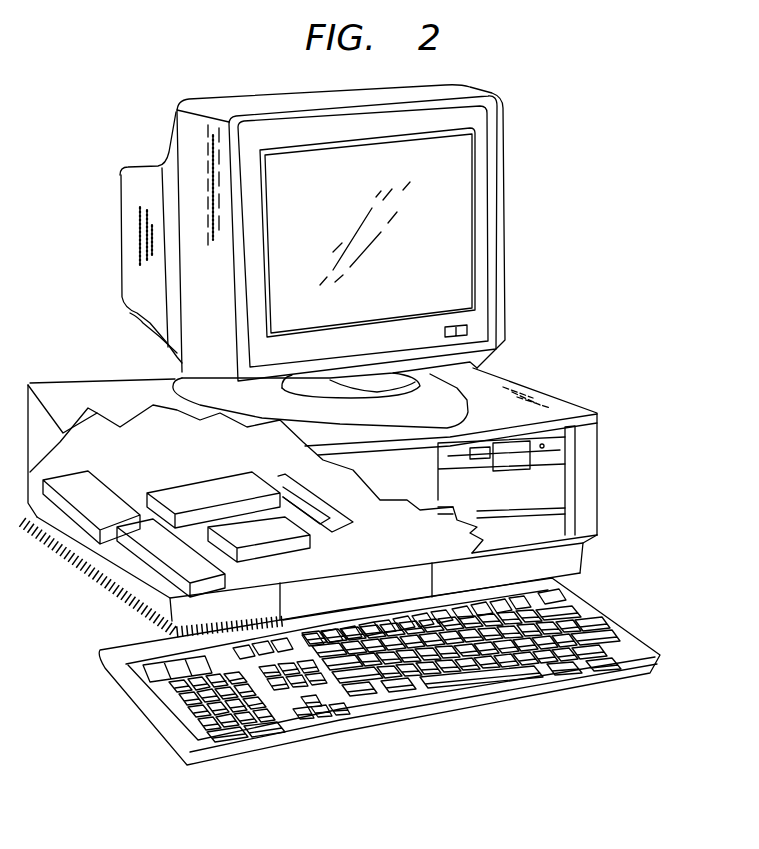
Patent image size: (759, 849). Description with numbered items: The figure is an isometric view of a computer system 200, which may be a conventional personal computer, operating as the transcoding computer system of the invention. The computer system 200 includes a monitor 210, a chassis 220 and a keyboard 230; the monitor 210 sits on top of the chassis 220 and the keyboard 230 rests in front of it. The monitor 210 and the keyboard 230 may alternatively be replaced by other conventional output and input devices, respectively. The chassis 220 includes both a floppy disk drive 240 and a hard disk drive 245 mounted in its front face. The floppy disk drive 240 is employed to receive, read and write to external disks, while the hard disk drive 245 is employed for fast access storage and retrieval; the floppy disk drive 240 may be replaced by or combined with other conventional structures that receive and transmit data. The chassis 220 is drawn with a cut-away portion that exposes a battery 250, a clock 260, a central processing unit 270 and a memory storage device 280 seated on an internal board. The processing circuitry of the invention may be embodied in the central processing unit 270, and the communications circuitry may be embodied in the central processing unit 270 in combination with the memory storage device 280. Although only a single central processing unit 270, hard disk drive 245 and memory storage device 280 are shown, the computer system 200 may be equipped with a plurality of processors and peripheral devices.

The computer system 200 is at (638, 77).
The monitor 210 is at (507, 233).
The chassis 220 is at (540, 393).
The keyboard 230 is at (600, 616).
The floppy disk drive 240 is at (560, 463).
The hard disk drive 245 is at (560, 520).
The battery 250 is at (233, 578).
The clock 260 is at (112, 489).
The central processing unit 270 is at (318, 541).
The memory storage device 280 is at (207, 488).